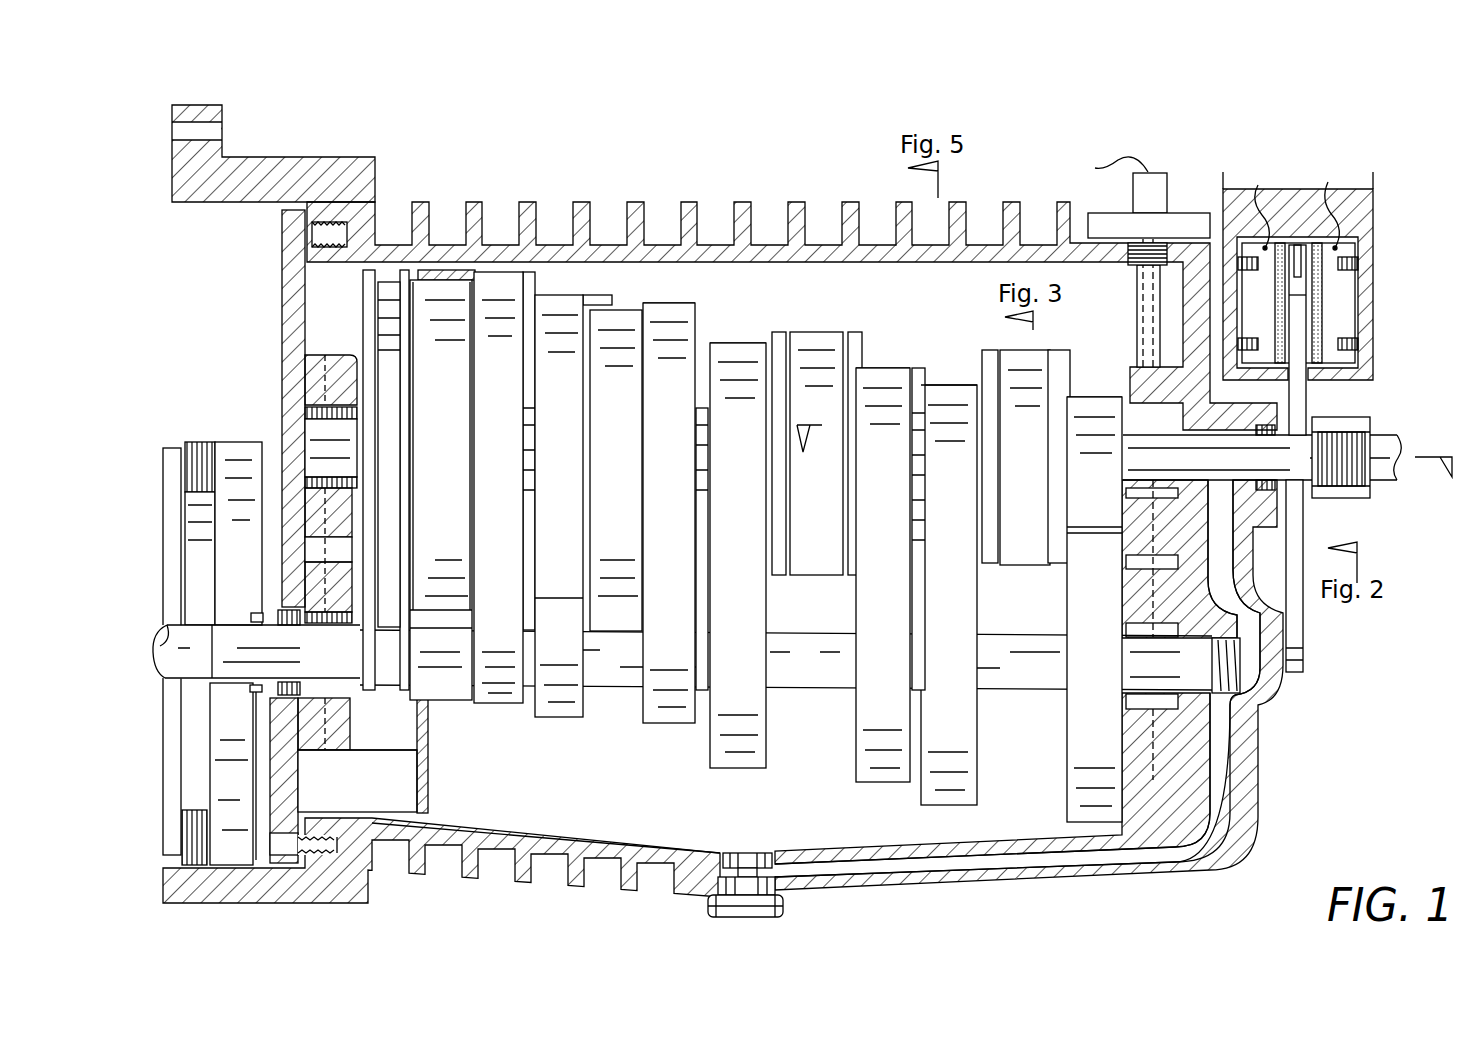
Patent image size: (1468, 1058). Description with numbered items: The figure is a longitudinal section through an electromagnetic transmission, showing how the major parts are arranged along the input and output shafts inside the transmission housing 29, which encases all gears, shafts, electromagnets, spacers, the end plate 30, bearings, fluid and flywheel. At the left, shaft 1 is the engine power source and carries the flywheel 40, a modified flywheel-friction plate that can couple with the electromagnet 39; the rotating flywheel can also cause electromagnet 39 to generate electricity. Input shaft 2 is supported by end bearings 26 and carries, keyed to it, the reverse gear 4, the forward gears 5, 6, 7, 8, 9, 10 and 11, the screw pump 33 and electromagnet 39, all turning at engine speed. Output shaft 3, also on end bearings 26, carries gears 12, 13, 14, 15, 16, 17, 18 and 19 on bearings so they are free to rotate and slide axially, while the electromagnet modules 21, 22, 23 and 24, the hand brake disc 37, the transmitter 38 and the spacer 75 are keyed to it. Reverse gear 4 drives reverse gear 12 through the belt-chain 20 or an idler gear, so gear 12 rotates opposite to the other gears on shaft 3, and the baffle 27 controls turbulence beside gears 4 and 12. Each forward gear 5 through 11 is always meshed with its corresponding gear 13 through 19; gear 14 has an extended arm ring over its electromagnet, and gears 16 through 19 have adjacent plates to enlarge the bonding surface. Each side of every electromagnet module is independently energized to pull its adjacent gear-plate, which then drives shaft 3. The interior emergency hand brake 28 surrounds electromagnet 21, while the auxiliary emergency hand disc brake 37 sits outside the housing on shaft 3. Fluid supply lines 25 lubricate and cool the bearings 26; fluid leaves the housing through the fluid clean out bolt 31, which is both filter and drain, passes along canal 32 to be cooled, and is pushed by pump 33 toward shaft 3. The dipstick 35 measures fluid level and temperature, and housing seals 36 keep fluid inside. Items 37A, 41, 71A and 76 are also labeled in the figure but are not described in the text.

The shaft 1 is at (150, 660).
The input shaft 2 is at (222, 690).
The output shaft 3 is at (1400, 495).
The reverse gear 4 is at (415, 698).
The forward gear 5 is at (494, 708).
The forward gear 6 is at (556, 720).
The forward gear 7 is at (665, 726).
The forward gear 8 is at (733, 772).
The forward gear 9 is at (880, 786).
The forward gear 10 is at (912, 825).
The forward gear 11 is at (1073, 818).
The reverse gear 12 is at (362, 297).
The gear 13 is at (524, 276).
The gear 14 is at (565, 296).
The gear 15 is at (662, 303).
The gear 16 is at (724, 342).
The gear 17 is at (872, 366).
The gear 18 is at (943, 384).
The gear 19 is at (1112, 395).
The belt-chain 20 is at (390, 495).
The electromagnet module 21 is at (435, 520).
The electromagnet module 22 is at (608, 520).
The electromagnet module 23 is at (808, 520).
The electromagnet module 24 is at (1016, 512).
The fluid supply line 25 is at (343, 350).
The end bearing 26 is at (330, 704).
The baffle 27 is at (430, 780).
The interior emergency hand brake 28 is at (452, 270).
The transmission housing 29 is at (608, 840).
The end plate 30 is at (283, 335).
The fluid clean out bolt 31 is at (742, 851).
The canal 32 is at (1005, 862).
The screw pump 33 is at (1245, 660).
The fluid dipstick 35 is at (1158, 176).
The housing seal 36 is at (270, 690).
The auxiliary emergency hand disc brake 37 is at (1248, 185).
The brush 37A is at (1298, 303).
The transmitter 38 is at (1352, 417).
The electromagnet 39 is at (246, 438).
The flywheel 40 is at (168, 758).
The bolt 41 is at (285, 230).
The pin 71A is at (262, 612).
The spacer 75 is at (920, 366).
The spacer 76 is at (706, 500).